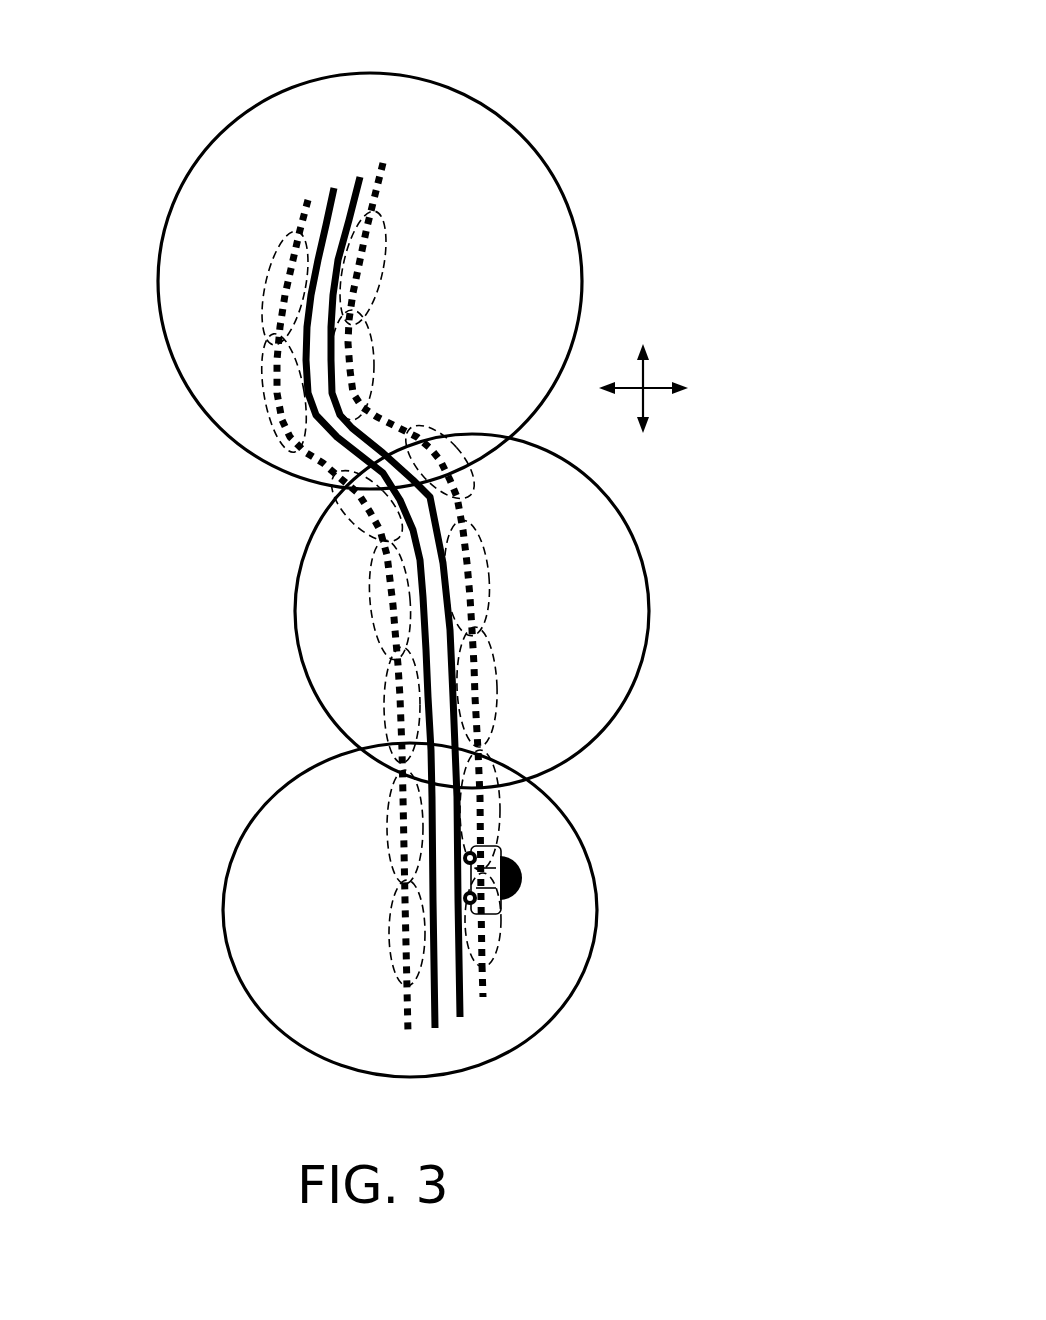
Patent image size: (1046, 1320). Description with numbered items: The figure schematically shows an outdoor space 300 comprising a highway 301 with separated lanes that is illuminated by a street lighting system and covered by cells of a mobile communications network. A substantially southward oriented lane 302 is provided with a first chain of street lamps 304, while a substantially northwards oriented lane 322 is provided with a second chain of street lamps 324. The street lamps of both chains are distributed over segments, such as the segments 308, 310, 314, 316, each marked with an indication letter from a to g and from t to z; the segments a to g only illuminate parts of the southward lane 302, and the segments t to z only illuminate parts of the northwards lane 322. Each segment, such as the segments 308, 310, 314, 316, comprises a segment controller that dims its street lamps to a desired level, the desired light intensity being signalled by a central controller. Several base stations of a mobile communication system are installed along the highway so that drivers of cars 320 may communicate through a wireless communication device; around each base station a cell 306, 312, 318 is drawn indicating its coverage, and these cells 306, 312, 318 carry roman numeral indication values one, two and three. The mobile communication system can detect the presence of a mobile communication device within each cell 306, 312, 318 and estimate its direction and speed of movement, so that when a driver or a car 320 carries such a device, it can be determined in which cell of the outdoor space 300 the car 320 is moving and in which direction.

The outdoor space 300 is at (594, 90).
The highway 301 is at (385, 163).
The southward oriented lane 302 is at (333, 188).
The first chain of street lamps 304 is at (303, 213).
The cell 306 is at (158, 291).
The segment 308 is at (365, 353).
The segment 310 is at (405, 431).
The cell 312 is at (296, 601).
The segment 314 is at (372, 607).
The segment 316 is at (387, 708).
The cell 318 is at (223, 916).
The car 320 is at (522, 868).
The northwards oriented lane 322 is at (460, 1019).
The second chain of street lamps 324 is at (486, 1000).